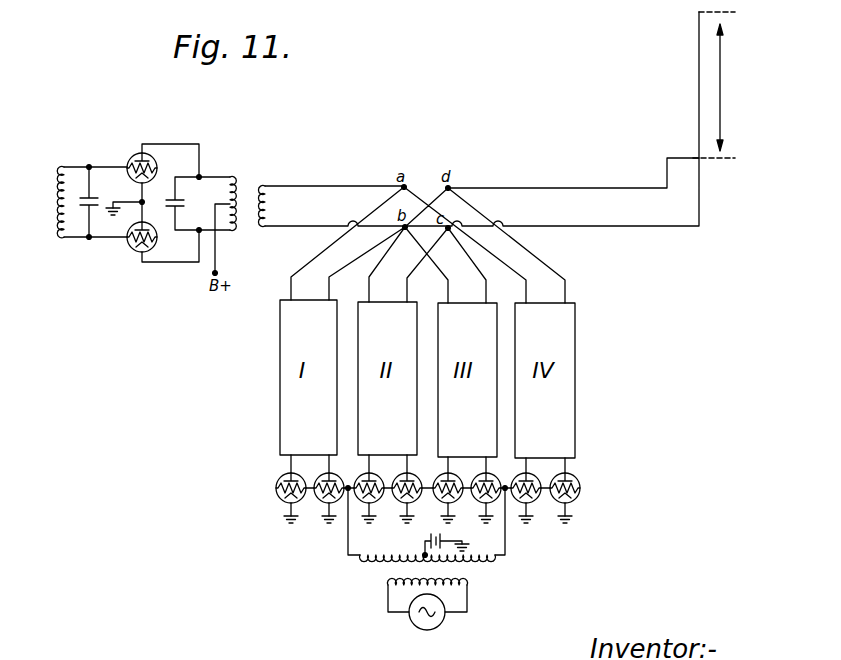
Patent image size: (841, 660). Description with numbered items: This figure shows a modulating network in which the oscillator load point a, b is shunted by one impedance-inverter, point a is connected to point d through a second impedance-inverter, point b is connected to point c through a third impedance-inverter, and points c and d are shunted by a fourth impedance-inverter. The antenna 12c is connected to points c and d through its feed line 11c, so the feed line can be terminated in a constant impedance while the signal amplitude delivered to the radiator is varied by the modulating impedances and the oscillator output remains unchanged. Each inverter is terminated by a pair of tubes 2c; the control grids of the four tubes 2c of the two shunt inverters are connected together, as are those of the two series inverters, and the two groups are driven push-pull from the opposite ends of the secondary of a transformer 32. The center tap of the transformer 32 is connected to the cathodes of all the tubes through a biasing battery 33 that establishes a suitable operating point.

The tubes 2c is at (320, 478).
The feed line 11c is at (482, 192).
The antenna 12c is at (700, 85).
The transformer 32 is at (469, 576).
The biasing battery 33 is at (445, 539).